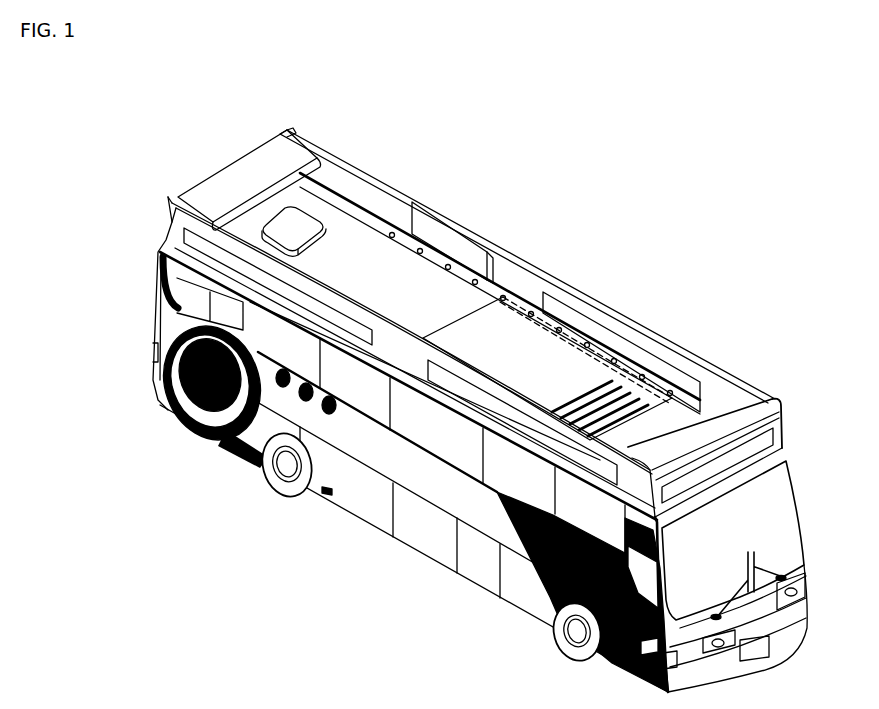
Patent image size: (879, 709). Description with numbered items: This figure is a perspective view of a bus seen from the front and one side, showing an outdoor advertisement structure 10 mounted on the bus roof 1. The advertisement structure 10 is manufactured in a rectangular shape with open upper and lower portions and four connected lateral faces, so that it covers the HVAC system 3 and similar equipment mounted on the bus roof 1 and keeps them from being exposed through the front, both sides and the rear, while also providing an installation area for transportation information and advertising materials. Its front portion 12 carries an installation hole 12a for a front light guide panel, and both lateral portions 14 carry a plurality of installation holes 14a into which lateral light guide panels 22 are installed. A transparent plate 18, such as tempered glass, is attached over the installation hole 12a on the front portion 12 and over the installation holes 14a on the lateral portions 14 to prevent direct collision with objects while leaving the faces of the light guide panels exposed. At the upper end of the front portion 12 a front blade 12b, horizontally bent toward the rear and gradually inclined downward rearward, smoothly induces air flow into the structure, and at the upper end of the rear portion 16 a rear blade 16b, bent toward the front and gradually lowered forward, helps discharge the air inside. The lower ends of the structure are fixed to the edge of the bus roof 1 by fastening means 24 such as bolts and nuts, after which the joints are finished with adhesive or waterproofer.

The bus roof 1 is at (390, 272).
The HVAC system 3 is at (657, 418).
The outdoor advertisement structure 10 is at (322, 135).
The front portion 12 is at (782, 402).
The installation hole 12a is at (782, 445).
The front blade 12b is at (728, 408).
The lateral portions 14 is at (168, 205).
The installation holes 14a is at (500, 410).
The rear portion 16 is at (223, 172).
The rear blade 16b is at (272, 152).
The transparent plate 18 is at (172, 235).
The lateral light guide panels 22 is at (470, 237).
The fastening means 24 is at (390, 185).